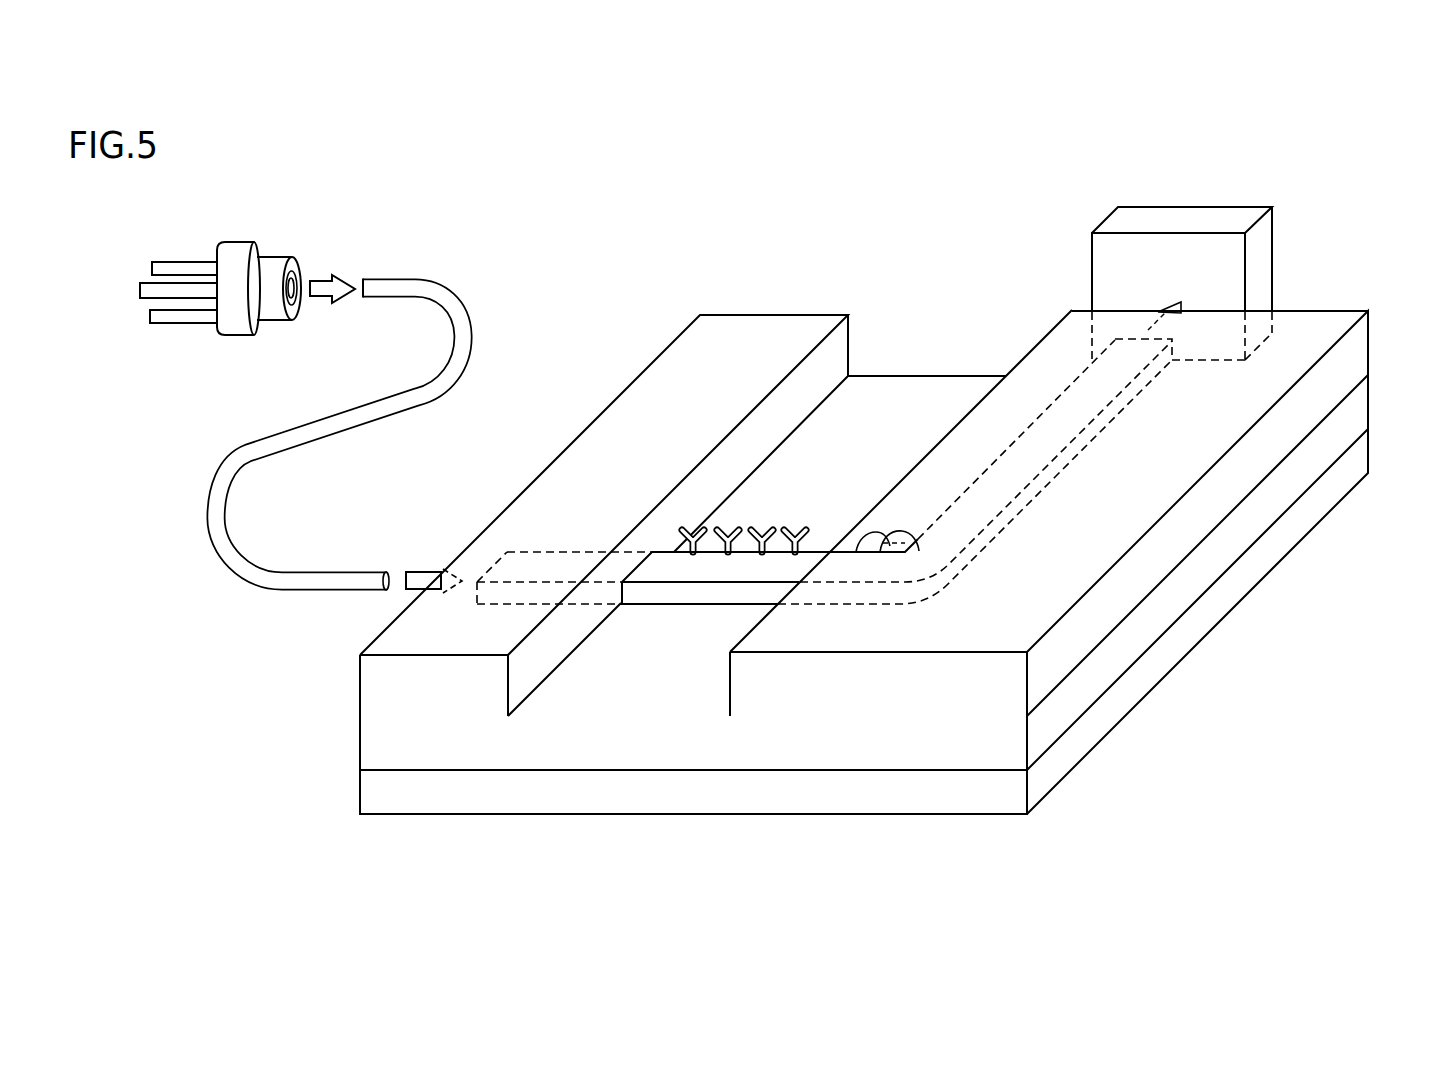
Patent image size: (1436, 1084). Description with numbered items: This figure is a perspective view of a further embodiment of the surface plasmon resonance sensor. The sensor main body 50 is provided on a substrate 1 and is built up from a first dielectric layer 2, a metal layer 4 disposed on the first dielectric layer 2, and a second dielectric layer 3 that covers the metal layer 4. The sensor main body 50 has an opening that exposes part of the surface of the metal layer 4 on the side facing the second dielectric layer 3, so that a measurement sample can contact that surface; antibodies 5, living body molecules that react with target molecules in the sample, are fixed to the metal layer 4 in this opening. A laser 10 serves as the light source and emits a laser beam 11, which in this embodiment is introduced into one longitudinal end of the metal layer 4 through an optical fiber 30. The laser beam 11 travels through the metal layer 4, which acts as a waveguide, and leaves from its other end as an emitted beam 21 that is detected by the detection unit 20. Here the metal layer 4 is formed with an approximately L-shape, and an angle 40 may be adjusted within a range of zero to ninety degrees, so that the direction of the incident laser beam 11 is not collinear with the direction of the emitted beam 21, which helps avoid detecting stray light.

The substrate 1 is at (1350, 467).
The first dielectric layer 2 is at (1350, 418).
The second dielectric layer 3 is at (1350, 360).
The metal layer 4 is at (668, 593).
The antibodies 5 is at (755, 555).
The laser 10 is at (232, 318).
The laser beam 11 is at (318, 297).
The detection unit 20 is at (1262, 258).
The emitted beam 21 is at (1181, 307).
The optical fiber 30 is at (472, 337).
The angle 40 is at (861, 547).
The sensor main body 50 is at (821, 296).